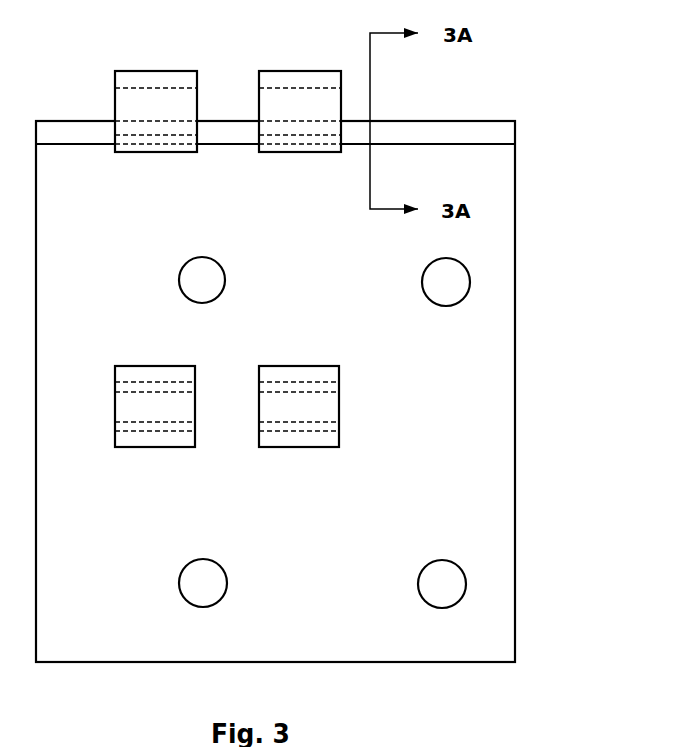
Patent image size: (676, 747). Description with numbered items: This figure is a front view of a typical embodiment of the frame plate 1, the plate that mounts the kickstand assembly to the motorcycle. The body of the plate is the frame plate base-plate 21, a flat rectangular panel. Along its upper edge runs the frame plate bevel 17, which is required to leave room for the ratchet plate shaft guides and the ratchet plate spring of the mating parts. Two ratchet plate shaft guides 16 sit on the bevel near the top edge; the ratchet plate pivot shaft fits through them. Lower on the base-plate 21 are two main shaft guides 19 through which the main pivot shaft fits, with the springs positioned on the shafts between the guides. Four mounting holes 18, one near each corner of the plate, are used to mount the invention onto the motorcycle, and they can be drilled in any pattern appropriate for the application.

The frame plate 1 is at (517, 100).
The ratchet plate shaft guide 16 is at (163, 72).
The frame plate bevel 17 is at (67, 128).
The mounting hole 18 is at (190, 263).
The main shaft guide 19 is at (163, 366).
The frame plate base-plate 21 is at (470, 405).